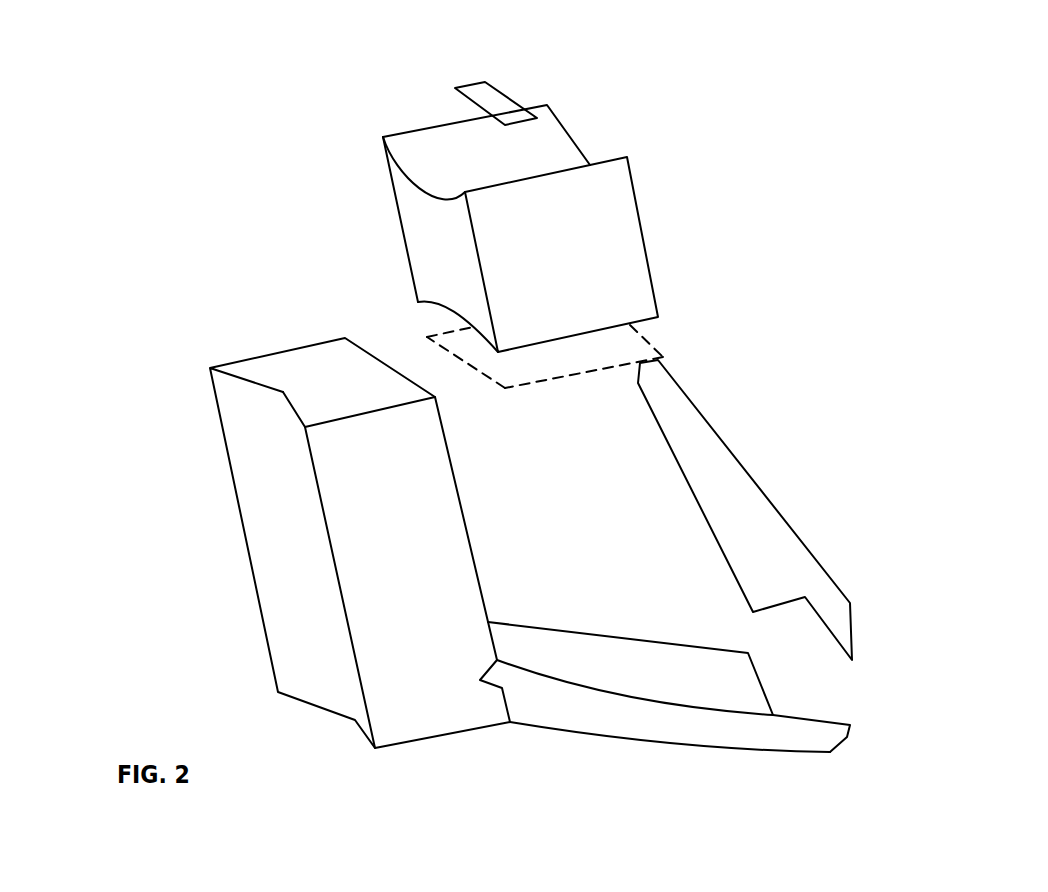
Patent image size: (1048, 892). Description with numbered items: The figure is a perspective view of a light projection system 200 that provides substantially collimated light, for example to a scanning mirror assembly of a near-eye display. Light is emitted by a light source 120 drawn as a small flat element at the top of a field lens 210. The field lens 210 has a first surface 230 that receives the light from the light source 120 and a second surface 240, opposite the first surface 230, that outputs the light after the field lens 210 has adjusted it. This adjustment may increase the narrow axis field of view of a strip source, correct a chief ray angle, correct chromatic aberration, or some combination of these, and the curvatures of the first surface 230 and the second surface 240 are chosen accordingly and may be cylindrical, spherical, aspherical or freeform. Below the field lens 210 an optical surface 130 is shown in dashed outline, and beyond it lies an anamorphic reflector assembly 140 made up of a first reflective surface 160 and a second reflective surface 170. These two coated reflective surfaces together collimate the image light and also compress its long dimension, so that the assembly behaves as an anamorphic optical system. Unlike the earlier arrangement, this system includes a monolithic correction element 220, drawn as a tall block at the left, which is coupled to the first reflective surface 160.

The light projection system 200 is at (88, 91).
The light source 120 is at (490, 102).
The field lens 210 is at (553, 210).
The first surface 230 is at (535, 150).
The second surface 240 is at (414, 299).
The optical surface 130 is at (659, 354).
The anamorphic reflector assembly 140 is at (749, 597).
The second reflective surface 170 is at (742, 482).
The first reflective surface 160 is at (737, 732).
The correction element 220 is at (282, 367).